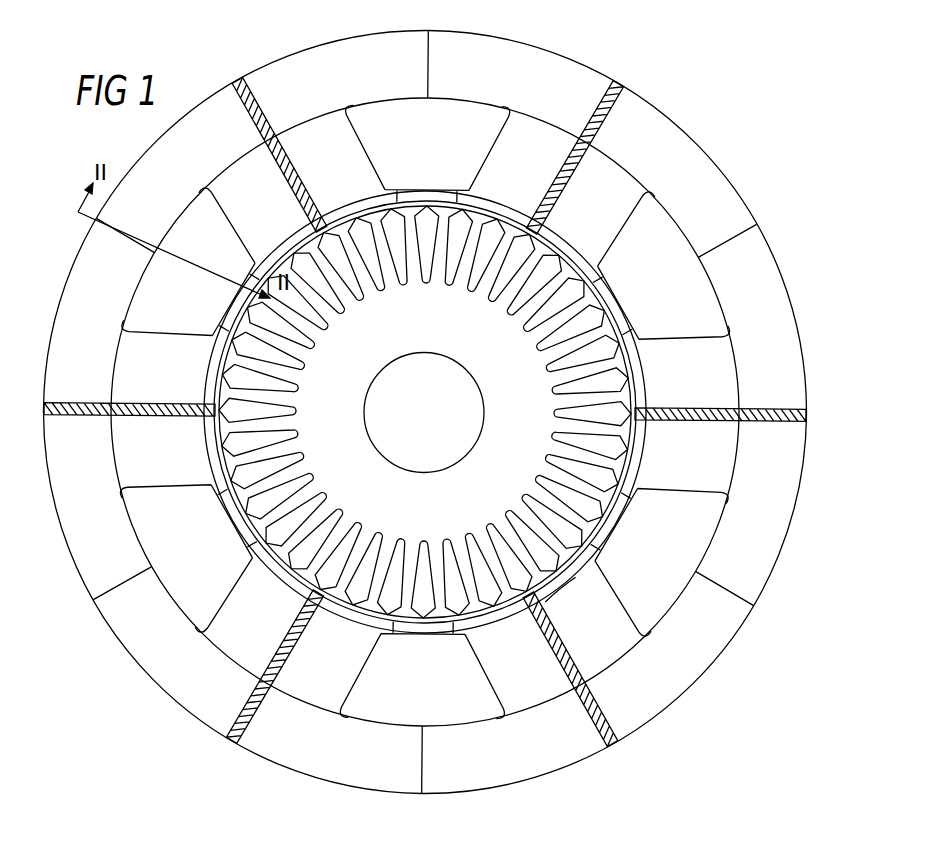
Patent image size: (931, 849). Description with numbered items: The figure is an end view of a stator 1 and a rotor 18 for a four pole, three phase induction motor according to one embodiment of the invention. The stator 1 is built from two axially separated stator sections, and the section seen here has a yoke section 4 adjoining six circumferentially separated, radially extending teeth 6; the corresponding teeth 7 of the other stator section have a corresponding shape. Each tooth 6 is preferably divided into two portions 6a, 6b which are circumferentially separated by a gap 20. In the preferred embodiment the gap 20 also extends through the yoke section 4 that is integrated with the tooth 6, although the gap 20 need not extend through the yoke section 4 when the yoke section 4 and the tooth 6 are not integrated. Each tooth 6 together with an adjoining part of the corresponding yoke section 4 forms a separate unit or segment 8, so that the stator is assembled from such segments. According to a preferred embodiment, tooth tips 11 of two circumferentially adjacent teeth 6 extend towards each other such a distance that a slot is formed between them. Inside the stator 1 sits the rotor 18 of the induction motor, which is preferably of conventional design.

The stator 1 is at (731, 124).
The yoke section 4 is at (737, 218).
The tooth 6 is at (542, 675).
The tooth portion 6a is at (492, 667).
The tooth portion 6b is at (600, 587).
The tooth 7 is at (662, 223).
The segment 8 is at (92, 626).
The tooth tip 11 is at (222, 492).
The rotor 18 is at (572, 577).
The gap 20 is at (235, 78).